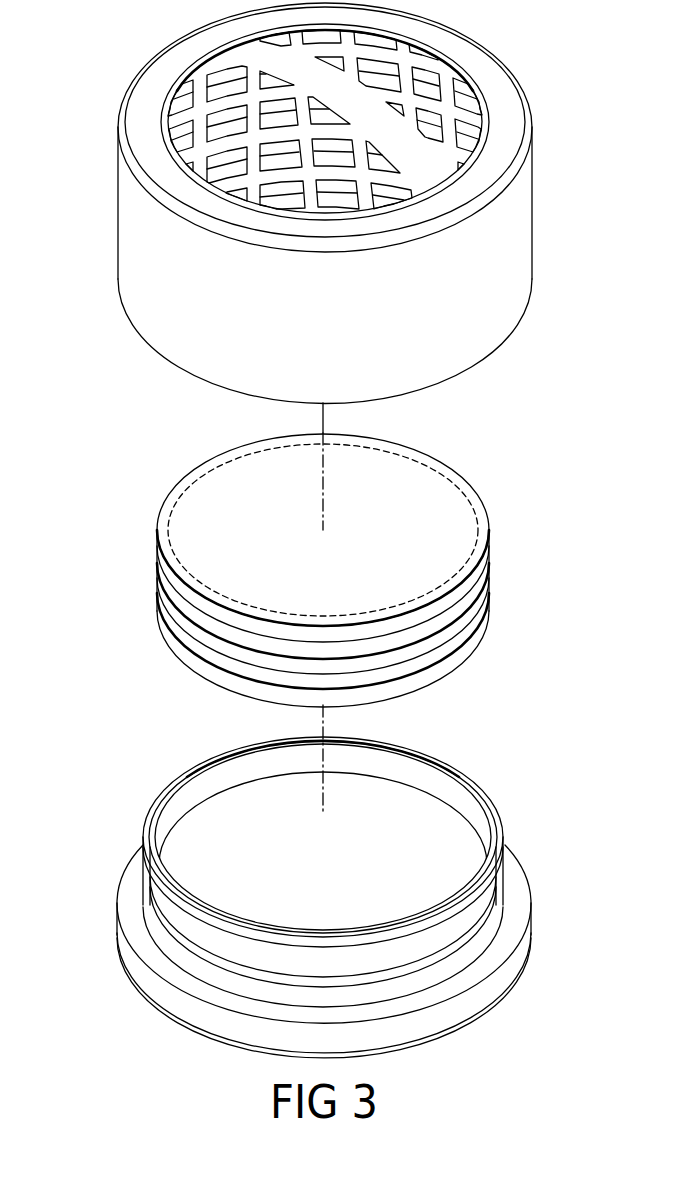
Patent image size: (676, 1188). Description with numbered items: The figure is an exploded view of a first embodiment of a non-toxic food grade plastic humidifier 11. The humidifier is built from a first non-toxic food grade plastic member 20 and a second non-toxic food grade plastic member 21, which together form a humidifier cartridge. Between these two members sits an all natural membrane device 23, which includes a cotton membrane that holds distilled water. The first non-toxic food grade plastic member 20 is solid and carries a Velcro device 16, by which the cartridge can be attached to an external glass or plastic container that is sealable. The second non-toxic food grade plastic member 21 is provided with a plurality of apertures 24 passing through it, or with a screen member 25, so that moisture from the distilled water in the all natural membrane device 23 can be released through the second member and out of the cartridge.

The non-toxic food grade plastic humidifier 11 is at (72, 474).
The Velcro device 16 is at (450, 1030).
The first non-toxic food grade plastic member 20 is at (131, 884).
The second non-toxic food grade plastic member 21 is at (286, 201).
The all natural membrane device 23 is at (489, 593).
The apertures 24 is at (428, 72).
The screen member 25 is at (263, 58).